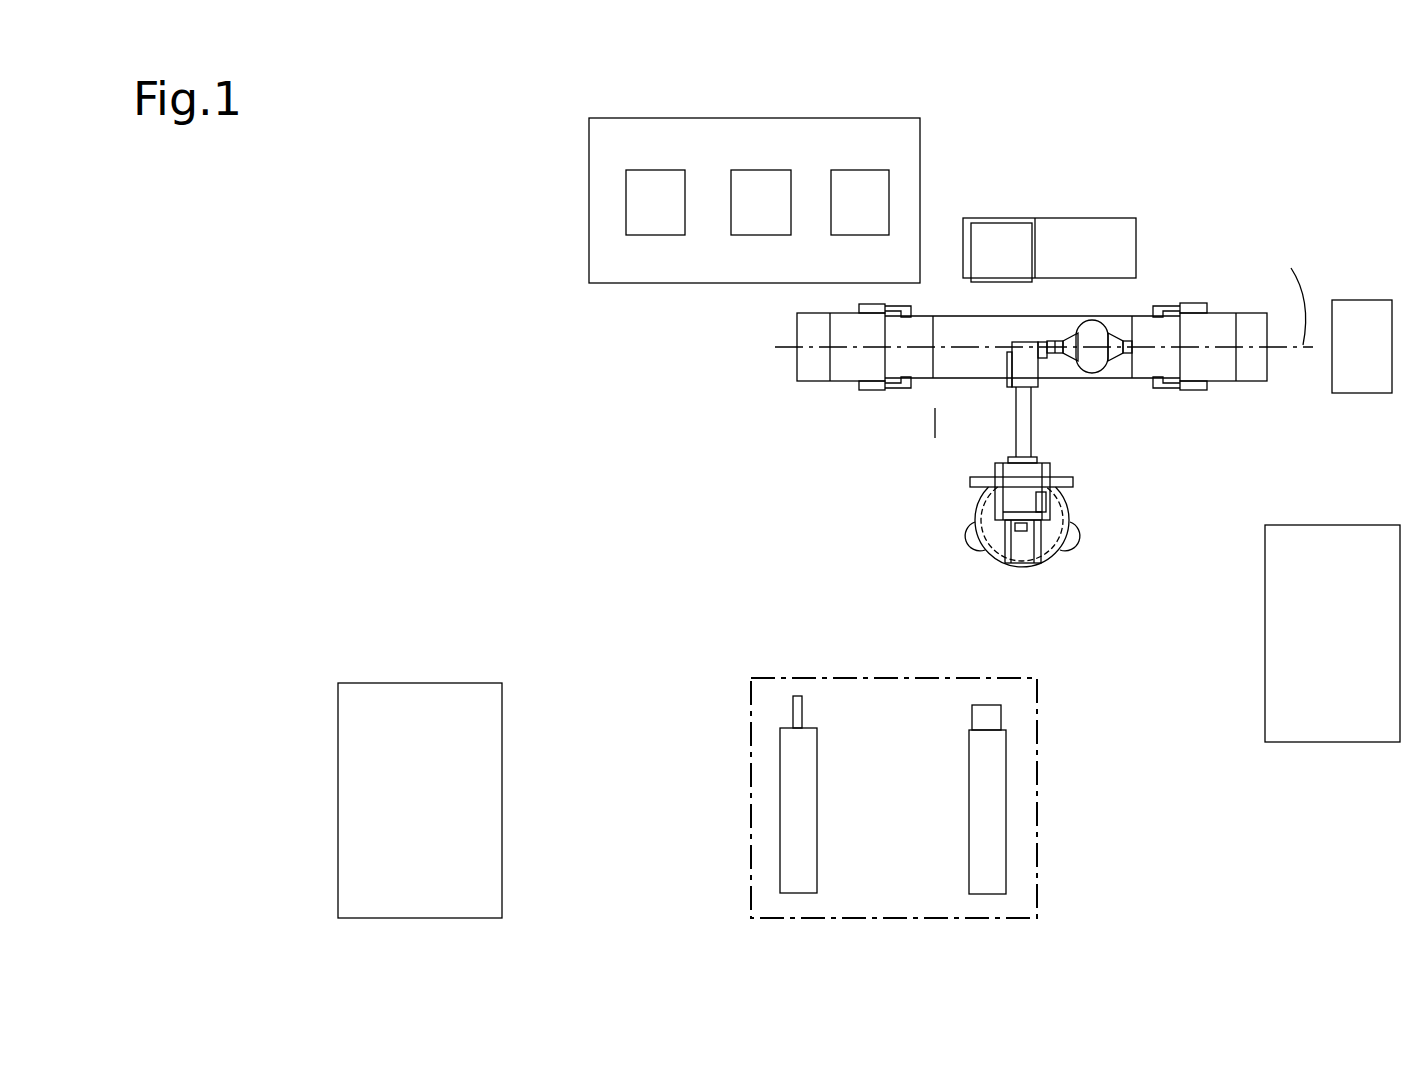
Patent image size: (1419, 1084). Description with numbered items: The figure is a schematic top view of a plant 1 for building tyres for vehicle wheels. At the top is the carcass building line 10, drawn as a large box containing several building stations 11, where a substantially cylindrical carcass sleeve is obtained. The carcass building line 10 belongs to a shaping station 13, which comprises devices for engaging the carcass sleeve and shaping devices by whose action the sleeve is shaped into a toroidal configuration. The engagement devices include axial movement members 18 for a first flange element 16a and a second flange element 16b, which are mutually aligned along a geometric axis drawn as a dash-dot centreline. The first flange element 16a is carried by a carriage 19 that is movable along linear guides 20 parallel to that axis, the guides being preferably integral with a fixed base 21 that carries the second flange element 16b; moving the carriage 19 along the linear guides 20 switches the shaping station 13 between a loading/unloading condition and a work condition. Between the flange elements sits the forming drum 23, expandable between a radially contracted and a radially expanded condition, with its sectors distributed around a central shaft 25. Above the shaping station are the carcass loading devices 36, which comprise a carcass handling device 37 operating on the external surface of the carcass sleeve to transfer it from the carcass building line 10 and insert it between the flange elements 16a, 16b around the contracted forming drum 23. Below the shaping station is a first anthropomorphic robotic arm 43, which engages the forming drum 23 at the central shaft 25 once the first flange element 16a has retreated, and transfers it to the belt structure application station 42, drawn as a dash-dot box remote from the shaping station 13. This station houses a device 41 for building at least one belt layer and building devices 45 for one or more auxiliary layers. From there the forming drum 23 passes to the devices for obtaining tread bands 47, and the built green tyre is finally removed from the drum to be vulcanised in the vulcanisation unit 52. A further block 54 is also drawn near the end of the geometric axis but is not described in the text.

The plant for building tyres 1 is at (400, 359).
The carcass building line 10 is at (582, 149).
The building stations 11 is at (670, 216).
The shaping station 13 is at (1124, 301).
The first flange element 16a is at (1145, 362).
The second flange element 16b is at (918, 360).
The axial movement members 18 is at (872, 325).
The carriage 19 is at (838, 334).
The linear guides 20 is at (975, 373).
The fixed base 21 is at (1268, 385).
The forming drum 23 is at (1098, 390).
The central shaft 25 is at (1063, 362).
The carcass loading devices 36 is at (1079, 214).
The carcass handling device 37 is at (999, 250).
The device for building at least one belt layer 41 is at (800, 832).
The belt structure application station 42 is at (1037, 767).
The first anthropomorphic robotic arm 43 is at (1063, 512).
The building devices of auxiliary layers 45 is at (990, 862).
The devices for obtaining tread bands 47 is at (502, 822).
The vulcanisation unit 52 is at (1316, 641).
The drive unit 54 is at (1362, 318).